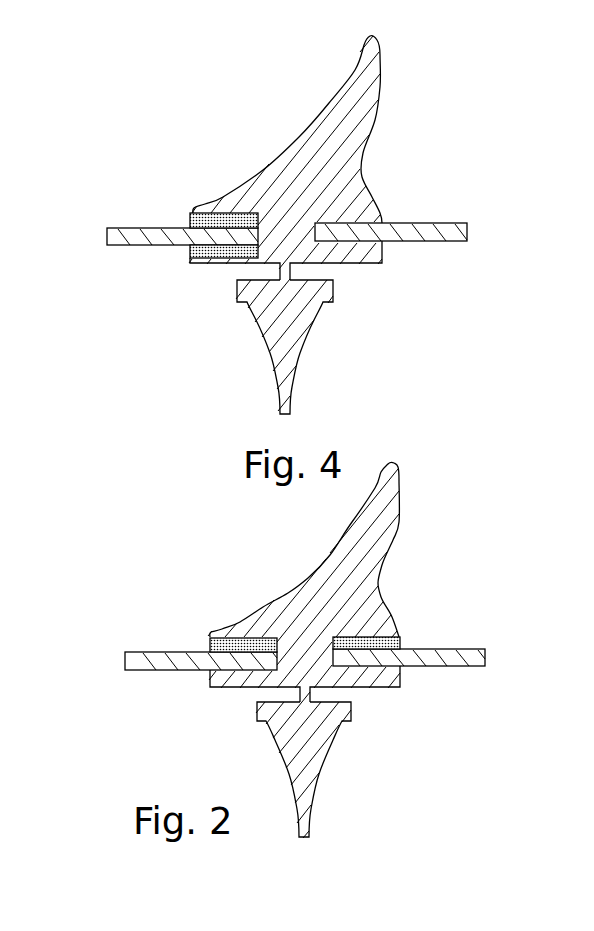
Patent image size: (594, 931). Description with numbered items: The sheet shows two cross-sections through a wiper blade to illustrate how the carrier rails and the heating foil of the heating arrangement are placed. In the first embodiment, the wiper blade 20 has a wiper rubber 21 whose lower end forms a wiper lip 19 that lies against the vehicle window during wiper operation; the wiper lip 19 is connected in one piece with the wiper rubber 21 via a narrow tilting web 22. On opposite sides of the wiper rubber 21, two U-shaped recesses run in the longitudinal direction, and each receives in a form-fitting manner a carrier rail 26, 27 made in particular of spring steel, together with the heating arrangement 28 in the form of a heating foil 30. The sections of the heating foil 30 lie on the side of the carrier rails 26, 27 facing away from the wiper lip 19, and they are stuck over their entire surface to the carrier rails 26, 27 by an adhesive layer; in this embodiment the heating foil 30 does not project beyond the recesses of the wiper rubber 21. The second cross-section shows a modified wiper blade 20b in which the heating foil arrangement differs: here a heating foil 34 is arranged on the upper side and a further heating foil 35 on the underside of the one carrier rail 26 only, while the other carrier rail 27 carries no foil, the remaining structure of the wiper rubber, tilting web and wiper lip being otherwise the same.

In FIG. 2, the wiper lip 19 is at (308, 808).
In FIG. 2, the wiper blade 20 is at (350, 622).
In FIG. 4, the wiper blade 20b is at (425, 153).
In FIG. 2, the wiper rubber 21 is at (382, 535).
In FIG. 2, the tilting web 22 is at (312, 690).
In FIG. 4, the carrier rail 26 is at (118, 241).
In FIG. 2, the carrier rail 26 is at (128, 659).
In FIG. 4, the carrier rail 27 is at (467, 238).
In FIG. 2, the carrier rail 27 is at (485, 656).
In FIG. 2, the heating arrangement 28 is at (210, 640).
In FIG. 2, the heating foil 30 is at (400, 640).
In FIG. 4, the heating foil 34 is at (190, 218).
In FIG. 4, the heating foil 35 is at (190, 252).